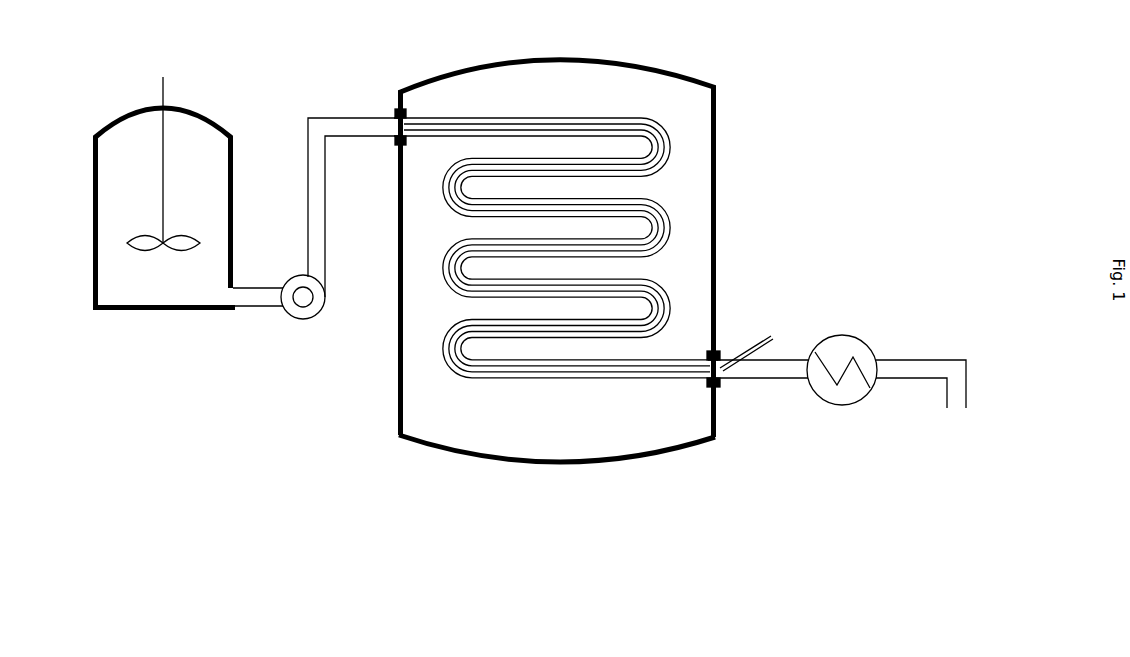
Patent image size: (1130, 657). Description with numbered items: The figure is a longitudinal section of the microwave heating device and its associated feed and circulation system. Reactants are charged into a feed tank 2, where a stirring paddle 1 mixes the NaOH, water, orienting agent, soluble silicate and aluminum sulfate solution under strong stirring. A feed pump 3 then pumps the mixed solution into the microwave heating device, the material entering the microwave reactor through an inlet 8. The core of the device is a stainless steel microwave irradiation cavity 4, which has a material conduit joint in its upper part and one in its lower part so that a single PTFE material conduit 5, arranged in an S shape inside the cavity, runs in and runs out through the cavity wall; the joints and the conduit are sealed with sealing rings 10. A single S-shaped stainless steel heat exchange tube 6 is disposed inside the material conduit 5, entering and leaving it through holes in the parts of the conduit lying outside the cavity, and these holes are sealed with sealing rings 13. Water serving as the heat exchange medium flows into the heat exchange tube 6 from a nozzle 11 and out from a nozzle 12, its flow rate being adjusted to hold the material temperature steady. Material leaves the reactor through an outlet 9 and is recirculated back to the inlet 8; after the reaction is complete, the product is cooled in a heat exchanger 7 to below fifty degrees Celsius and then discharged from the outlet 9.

The stirring paddle 1 is at (178, 86).
The feed tank 2 is at (180, 323).
The feed pump 3 is at (313, 323).
The microwave irradiation cavity 4 is at (538, 480).
The material conduit 5 is at (306, 130).
The heat exchange tube 6 is at (398, 131).
The heat exchanger 7 is at (863, 328).
The inlet 8 is at (238, 283).
The outlet 9 is at (966, 408).
The sealing ring 10 is at (404, 114).
The nozzle 11 is at (773, 334).
The nozzle 12 is at (396, 126).
The sealing ring 13 is at (388, 119).